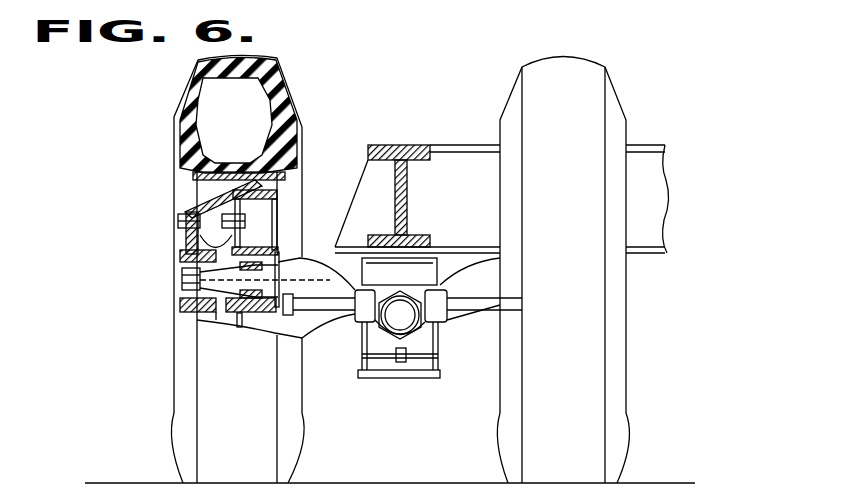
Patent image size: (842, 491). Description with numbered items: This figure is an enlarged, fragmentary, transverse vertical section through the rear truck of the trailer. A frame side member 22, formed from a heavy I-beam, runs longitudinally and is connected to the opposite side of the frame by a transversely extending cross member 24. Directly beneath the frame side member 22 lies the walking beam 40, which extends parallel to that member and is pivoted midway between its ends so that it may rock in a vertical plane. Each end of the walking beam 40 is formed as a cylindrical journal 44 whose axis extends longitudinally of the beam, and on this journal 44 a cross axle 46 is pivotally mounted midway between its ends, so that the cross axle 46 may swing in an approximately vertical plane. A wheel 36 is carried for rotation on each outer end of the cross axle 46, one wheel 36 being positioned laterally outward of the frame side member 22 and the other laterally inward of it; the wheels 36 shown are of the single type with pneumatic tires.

The rear wheel 36 is at (180, 206).
The cross member 24 is at (653, 187).
The frame side member 22 is at (408, 194).
The cross axle 46 is at (313, 258).
The cylindrical journal 44 is at (434, 335).
The walking beam 40 is at (396, 379).